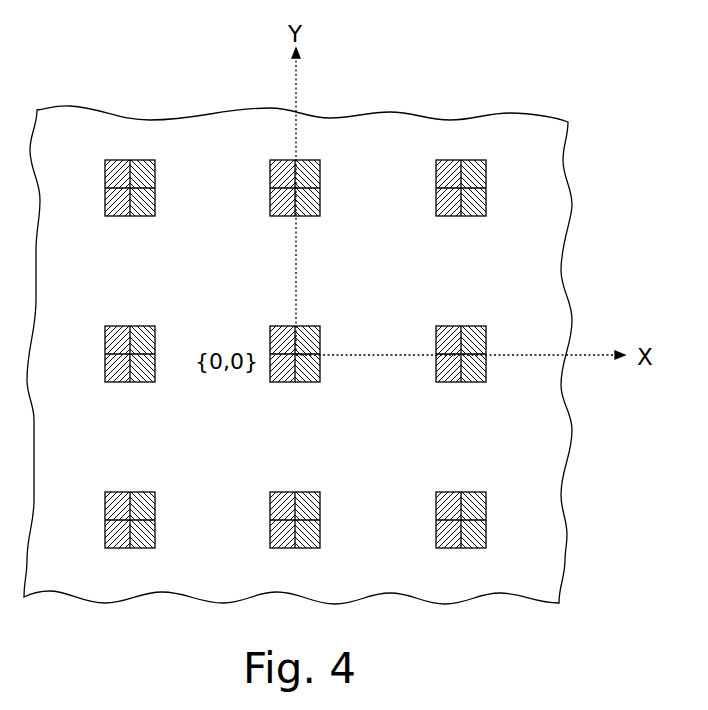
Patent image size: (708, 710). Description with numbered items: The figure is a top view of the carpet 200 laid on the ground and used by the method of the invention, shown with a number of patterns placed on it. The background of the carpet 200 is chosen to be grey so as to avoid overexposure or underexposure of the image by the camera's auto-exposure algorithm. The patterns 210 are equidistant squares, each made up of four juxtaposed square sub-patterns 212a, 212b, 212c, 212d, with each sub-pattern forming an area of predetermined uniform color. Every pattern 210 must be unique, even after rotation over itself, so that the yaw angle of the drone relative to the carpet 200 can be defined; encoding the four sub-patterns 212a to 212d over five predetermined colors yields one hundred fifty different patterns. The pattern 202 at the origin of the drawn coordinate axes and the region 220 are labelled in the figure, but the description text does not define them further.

The carpet 200 is at (533, 456).
The die at origin 202 is at (277, 383).
The pattern 210 is at (489, 154).
The square sub-pattern 212a is at (440, 165).
The square sub-pattern 212b is at (488, 173).
The square sub-pattern 212c is at (488, 200).
The square sub-pattern 212d is at (447, 205).
The die region 220 is at (487, 293).